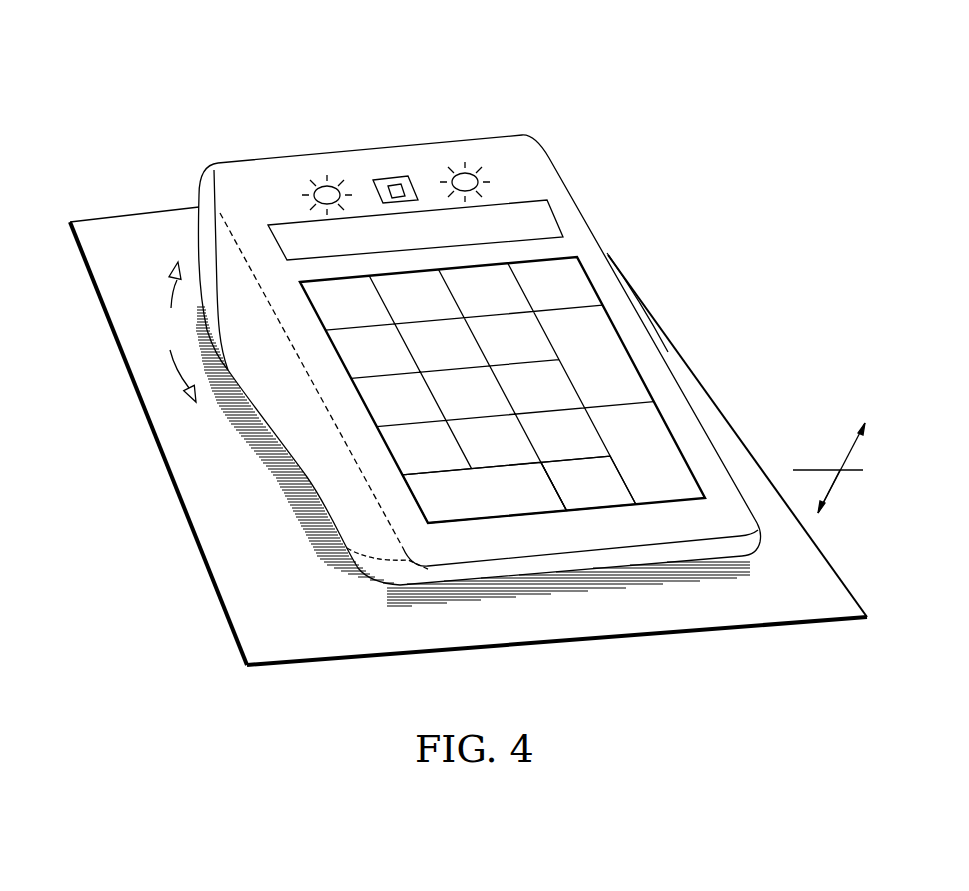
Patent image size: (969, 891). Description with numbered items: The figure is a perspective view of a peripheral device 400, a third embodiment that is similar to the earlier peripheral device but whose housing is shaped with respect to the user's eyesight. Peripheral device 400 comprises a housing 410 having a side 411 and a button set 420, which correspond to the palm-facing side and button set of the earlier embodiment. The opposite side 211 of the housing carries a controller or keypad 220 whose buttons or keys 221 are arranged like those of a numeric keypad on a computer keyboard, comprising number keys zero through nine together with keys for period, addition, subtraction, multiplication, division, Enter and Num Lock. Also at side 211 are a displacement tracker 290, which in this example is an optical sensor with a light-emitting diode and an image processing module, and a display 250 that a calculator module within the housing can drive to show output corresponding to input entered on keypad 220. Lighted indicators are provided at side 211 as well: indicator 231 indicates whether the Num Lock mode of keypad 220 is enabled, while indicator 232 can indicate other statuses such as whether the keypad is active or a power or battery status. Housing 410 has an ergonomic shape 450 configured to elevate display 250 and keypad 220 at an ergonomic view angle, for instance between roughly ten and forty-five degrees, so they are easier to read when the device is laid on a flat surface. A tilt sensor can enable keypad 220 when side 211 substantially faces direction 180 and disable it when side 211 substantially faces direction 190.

The peripheral device 400 is at (478, 45).
The side 211 is at (639, 358).
The keypad 220 is at (460, 513).
The keys 221 is at (543, 507).
The indicator 231 is at (320, 187).
The indicator 232 is at (470, 172).
The display 250 is at (550, 205).
The displacement tracker 290 is at (393, 180).
The housing 410 is at (290, 417).
The side 411 is at (302, 482).
The button set 420 is at (212, 245).
The ergonomic shape 450 is at (173, 332).
The direction 180 is at (812, 491).
The direction 190 is at (829, 468).